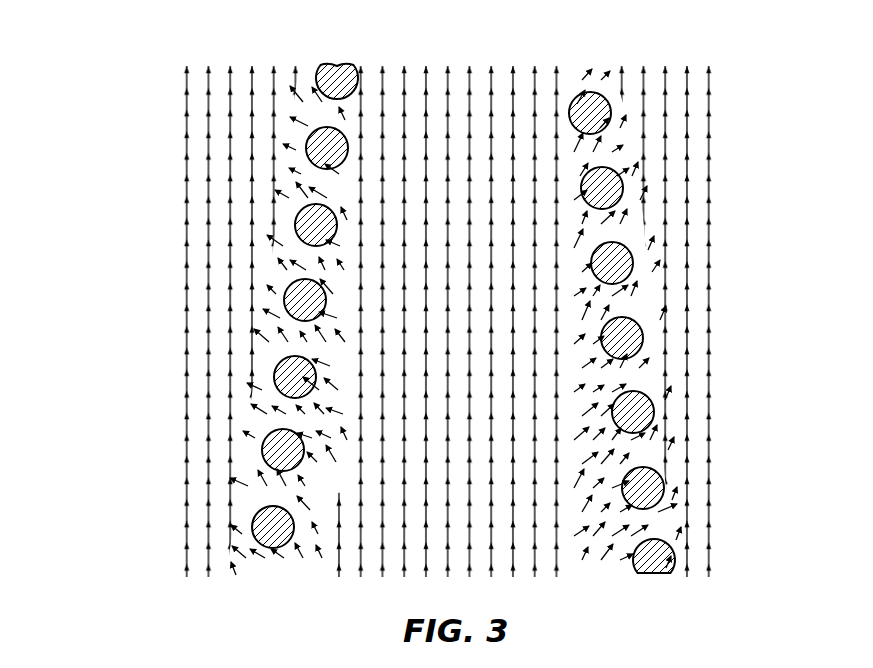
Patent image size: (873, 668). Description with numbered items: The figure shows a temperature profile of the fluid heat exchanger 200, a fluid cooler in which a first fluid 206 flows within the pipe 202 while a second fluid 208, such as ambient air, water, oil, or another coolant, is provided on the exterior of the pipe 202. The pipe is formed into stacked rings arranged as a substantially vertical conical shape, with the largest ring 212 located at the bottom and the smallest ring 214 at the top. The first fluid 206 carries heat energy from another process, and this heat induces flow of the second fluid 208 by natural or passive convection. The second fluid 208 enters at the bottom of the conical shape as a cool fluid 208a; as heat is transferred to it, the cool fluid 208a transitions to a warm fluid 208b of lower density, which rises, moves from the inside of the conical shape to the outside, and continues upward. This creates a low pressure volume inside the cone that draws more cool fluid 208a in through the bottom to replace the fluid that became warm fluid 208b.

The fluid heat exchanger 200 is at (239, 247).
The pipe 202 is at (651, 397).
The first fluid 206 is at (638, 322).
The second fluid 208 is at (80, 490).
The cool fluid 208a is at (397, 553).
The warm fluid 208b is at (243, 435).
The largest ring 212 is at (673, 565).
The smallest ring 214 is at (315, 72).